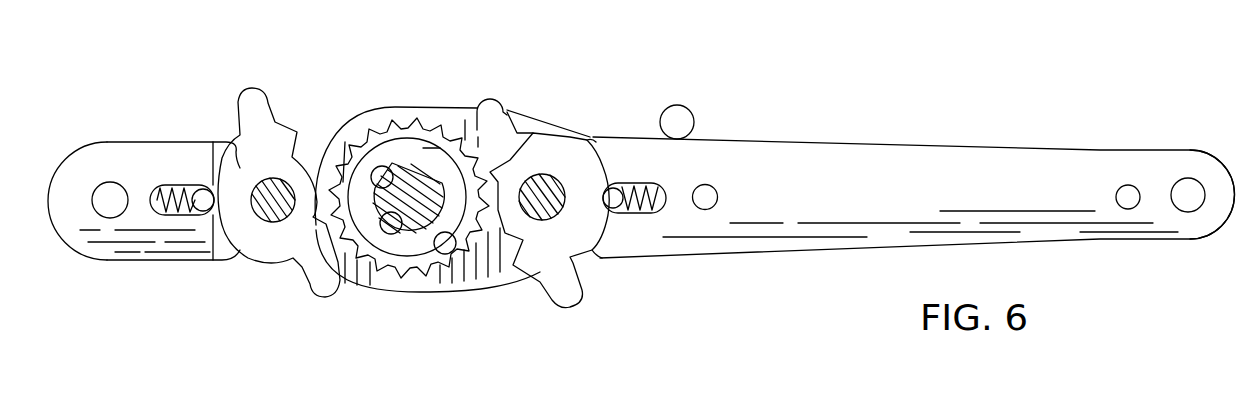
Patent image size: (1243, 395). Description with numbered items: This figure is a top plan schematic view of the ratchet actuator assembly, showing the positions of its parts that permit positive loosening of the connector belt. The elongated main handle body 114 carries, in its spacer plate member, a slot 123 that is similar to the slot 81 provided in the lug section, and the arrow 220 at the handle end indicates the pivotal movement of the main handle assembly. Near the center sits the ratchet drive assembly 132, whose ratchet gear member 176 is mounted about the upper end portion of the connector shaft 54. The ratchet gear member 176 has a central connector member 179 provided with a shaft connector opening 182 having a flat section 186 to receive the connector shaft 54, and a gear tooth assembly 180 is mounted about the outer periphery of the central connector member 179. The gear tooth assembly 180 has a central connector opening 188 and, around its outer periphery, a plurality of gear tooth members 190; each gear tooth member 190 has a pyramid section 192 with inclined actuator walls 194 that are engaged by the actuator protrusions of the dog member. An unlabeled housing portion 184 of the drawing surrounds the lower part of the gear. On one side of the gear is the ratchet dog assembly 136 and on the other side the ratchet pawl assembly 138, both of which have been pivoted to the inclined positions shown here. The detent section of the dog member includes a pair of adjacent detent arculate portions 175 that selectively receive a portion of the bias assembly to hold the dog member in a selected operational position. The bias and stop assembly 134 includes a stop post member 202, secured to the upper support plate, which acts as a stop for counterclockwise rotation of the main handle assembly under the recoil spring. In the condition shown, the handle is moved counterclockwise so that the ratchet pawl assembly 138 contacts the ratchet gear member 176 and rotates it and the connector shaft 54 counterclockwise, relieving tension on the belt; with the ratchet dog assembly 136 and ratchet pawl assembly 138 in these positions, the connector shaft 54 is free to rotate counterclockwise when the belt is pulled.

The connector shaft 54 is at (392, 163).
The slot 81 is at (196, 185).
The main handle body 114 is at (912, 167).
The slot 123 is at (674, 175).
The ratchet drive assembly 132 is at (468, 105).
The bias and stop assembly 134 is at (608, 185).
The ratchet dog assembly 136 is at (275, 82).
The ratchet pawl assembly 138 is at (518, 95).
The detent arculate portions 175 is at (631, 239).
The ratchet gear member 176 is at (413, 252).
The central connector member 179 is at (425, 148).
The gear tooth assembly 180 is at (387, 250).
The shaft connector opening 182 is at (360, 130).
The housing 184 is at (378, 278).
The flat section 186 is at (480, 172).
The central connector opening 188 is at (479, 232).
The gear tooth members 190 is at (345, 142).
The pyramid section 192 is at (393, 112).
The inclined actuator walls 194 is at (378, 130).
The stop post member 202 is at (678, 122).
The arrow 220 is at (1240, 183).